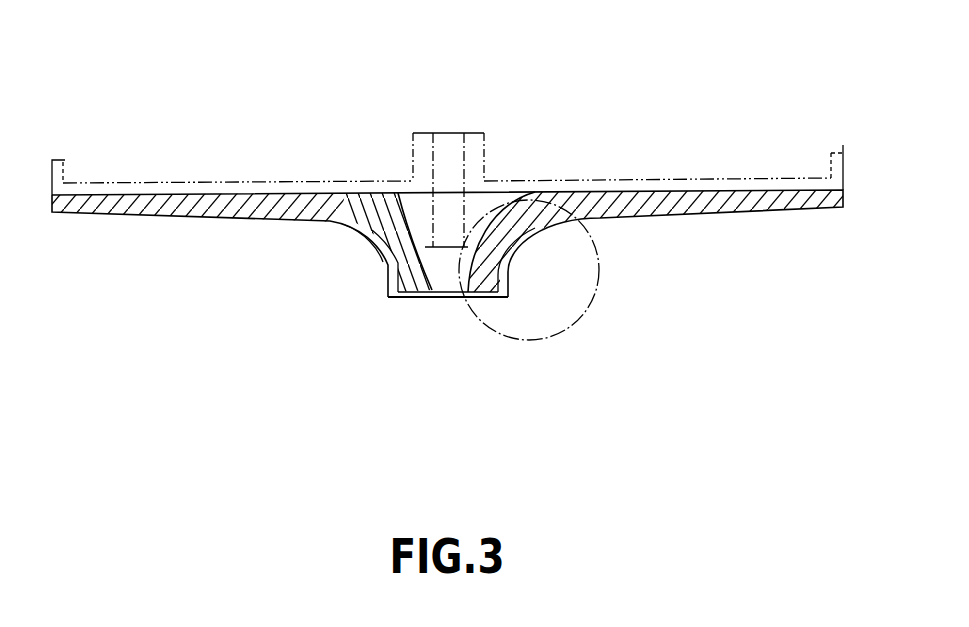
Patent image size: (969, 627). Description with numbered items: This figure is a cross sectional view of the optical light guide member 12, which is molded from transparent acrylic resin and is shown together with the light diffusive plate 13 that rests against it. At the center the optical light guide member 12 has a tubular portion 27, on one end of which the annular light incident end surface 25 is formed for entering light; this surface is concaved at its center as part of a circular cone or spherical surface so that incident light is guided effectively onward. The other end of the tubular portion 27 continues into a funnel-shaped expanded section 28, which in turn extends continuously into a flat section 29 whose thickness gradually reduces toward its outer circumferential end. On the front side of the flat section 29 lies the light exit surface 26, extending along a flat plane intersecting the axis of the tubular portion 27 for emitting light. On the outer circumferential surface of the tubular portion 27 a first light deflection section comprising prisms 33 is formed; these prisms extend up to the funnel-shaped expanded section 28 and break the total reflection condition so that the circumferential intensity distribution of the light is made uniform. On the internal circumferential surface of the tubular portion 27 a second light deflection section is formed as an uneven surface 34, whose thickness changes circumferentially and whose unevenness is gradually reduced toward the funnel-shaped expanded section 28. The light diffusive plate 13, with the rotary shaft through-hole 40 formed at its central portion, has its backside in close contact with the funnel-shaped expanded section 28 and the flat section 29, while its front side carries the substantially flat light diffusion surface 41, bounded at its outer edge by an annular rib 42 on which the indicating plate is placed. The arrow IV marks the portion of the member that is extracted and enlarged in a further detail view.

The optical light guide member 12 is at (662, 249).
The light diffusive plate 13 is at (681, 127).
The light incident end surface 25 is at (423, 300).
The light exit surface 26 is at (180, 183).
The tubular portion 27 is at (400, 258).
The funnel-shaped expanded section 28 is at (402, 225).
The flat section 29 is at (163, 212).
The prisms 33 is at (388, 298).
The uneven surface 34 is at (446, 252).
The rotary shaft through-hole 40 is at (437, 133).
The light diffusion surface 41 is at (574, 176).
The rib 42 is at (843, 140).
The arrow IV is at (526, 345).